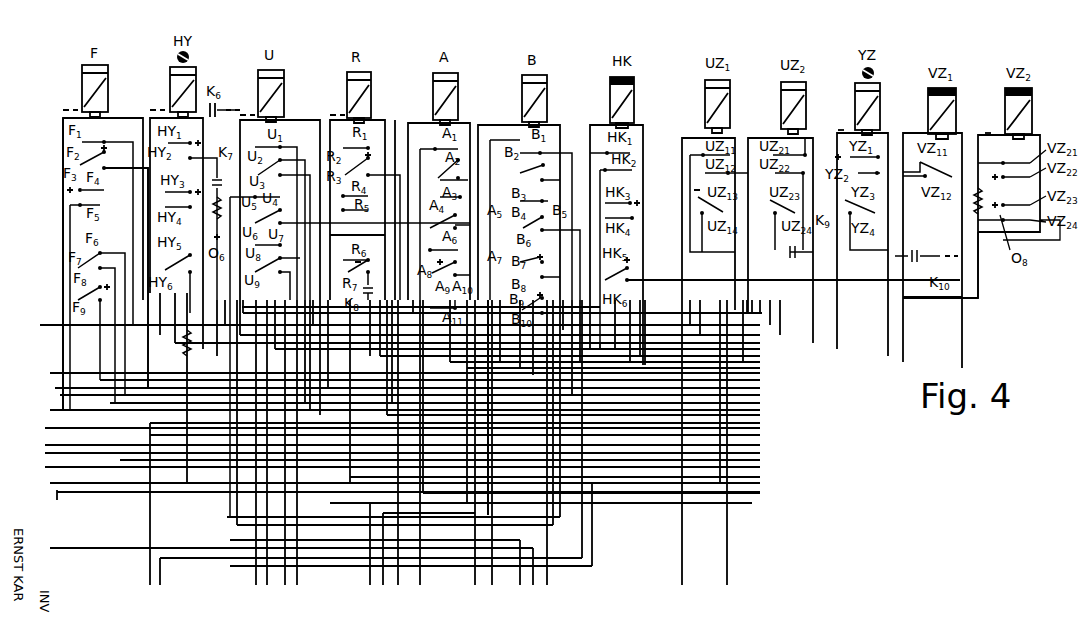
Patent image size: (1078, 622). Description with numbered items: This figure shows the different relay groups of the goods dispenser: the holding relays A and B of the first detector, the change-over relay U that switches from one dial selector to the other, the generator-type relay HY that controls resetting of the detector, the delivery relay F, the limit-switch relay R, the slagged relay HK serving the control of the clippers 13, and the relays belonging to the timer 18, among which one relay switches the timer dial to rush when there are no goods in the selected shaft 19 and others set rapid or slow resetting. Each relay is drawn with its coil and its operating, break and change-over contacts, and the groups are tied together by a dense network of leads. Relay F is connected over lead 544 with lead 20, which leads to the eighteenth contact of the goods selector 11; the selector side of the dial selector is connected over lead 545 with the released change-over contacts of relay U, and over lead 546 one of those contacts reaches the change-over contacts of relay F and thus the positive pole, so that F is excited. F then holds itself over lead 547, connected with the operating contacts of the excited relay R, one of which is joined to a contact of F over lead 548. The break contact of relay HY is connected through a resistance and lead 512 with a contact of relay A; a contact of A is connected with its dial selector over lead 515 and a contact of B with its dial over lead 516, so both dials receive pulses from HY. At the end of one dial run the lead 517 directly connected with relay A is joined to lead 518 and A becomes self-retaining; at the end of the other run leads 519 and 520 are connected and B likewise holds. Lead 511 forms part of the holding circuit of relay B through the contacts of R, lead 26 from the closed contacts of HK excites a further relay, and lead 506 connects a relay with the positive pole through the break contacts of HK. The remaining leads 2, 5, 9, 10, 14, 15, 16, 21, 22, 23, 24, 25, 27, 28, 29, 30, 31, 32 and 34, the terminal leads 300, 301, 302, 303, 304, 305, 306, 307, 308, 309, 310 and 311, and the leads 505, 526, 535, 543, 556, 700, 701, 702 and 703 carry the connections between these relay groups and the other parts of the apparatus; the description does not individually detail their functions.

The bus line 2 is at (760, 373).
The bus line 5 is at (760, 368).
The bus line 9 is at (760, 349).
The bus line 10 is at (760, 356).
The goods selector 11 is at (768, 310).
The clippers 13 is at (760, 403).
The bus line 14 is at (760, 428).
The bus line 15 is at (760, 435).
The bus line 16 is at (760, 388).
The timer 18 is at (760, 362).
The shaft 19 is at (760, 325).
The lead 20 is at (760, 415).
The bus line 21 is at (760, 335).
The bus line 22 is at (760, 483).
The bus line 23 is at (760, 445).
The bus line 24 is at (760, 453).
The bus line 25 is at (760, 460).
The lead 26 is at (760, 343).
The bus line 27 is at (760, 382).
The bus line 28 is at (760, 395).
The bus line 29 is at (760, 493).
The bus line 30 is at (752, 503).
The bus line 31 is at (760, 423).
The bus line 32 is at (760, 467).
The bus line 34 is at (760, 410).
The line 300 is at (40, 325).
The line 301 is at (48, 364).
The line 302 is at (60, 388).
The line 303 is at (50, 410).
The line 304 is at (50, 428).
The line 305 is at (45, 445).
The line 306 is at (45, 453).
The line 307 is at (45, 467).
The line 308 is at (50, 483).
The line 309 is at (57, 492).
The line 310 is at (68, 502).
The line 311 is at (68, 548).
The line 505 is at (267, 585).
The lead 506 is at (655, 287).
The lead 511 is at (348, 522).
The lead 512 is at (490, 506).
The lead 515 is at (547, 585).
The lead 516 is at (492, 585).
The lead 517 is at (398, 585).
The lead 518 is at (475, 585).
The lead 519 is at (370, 585).
The lead 520 is at (383, 585).
The line 526 is at (825, 280).
The line 535 is at (150, 512).
The line 543 is at (338, 236).
The lead 544 is at (63, 242).
The lead 545 is at (297, 585).
The lead 546 is at (123, 172).
The lead 547 is at (130, 118).
The lead 548 is at (183, 347).
The line 556 is at (256, 583).
The line 700 is at (727, 580).
The line 701 is at (533, 585).
The line 702 is at (520, 585).
The line 703 is at (285, 585).